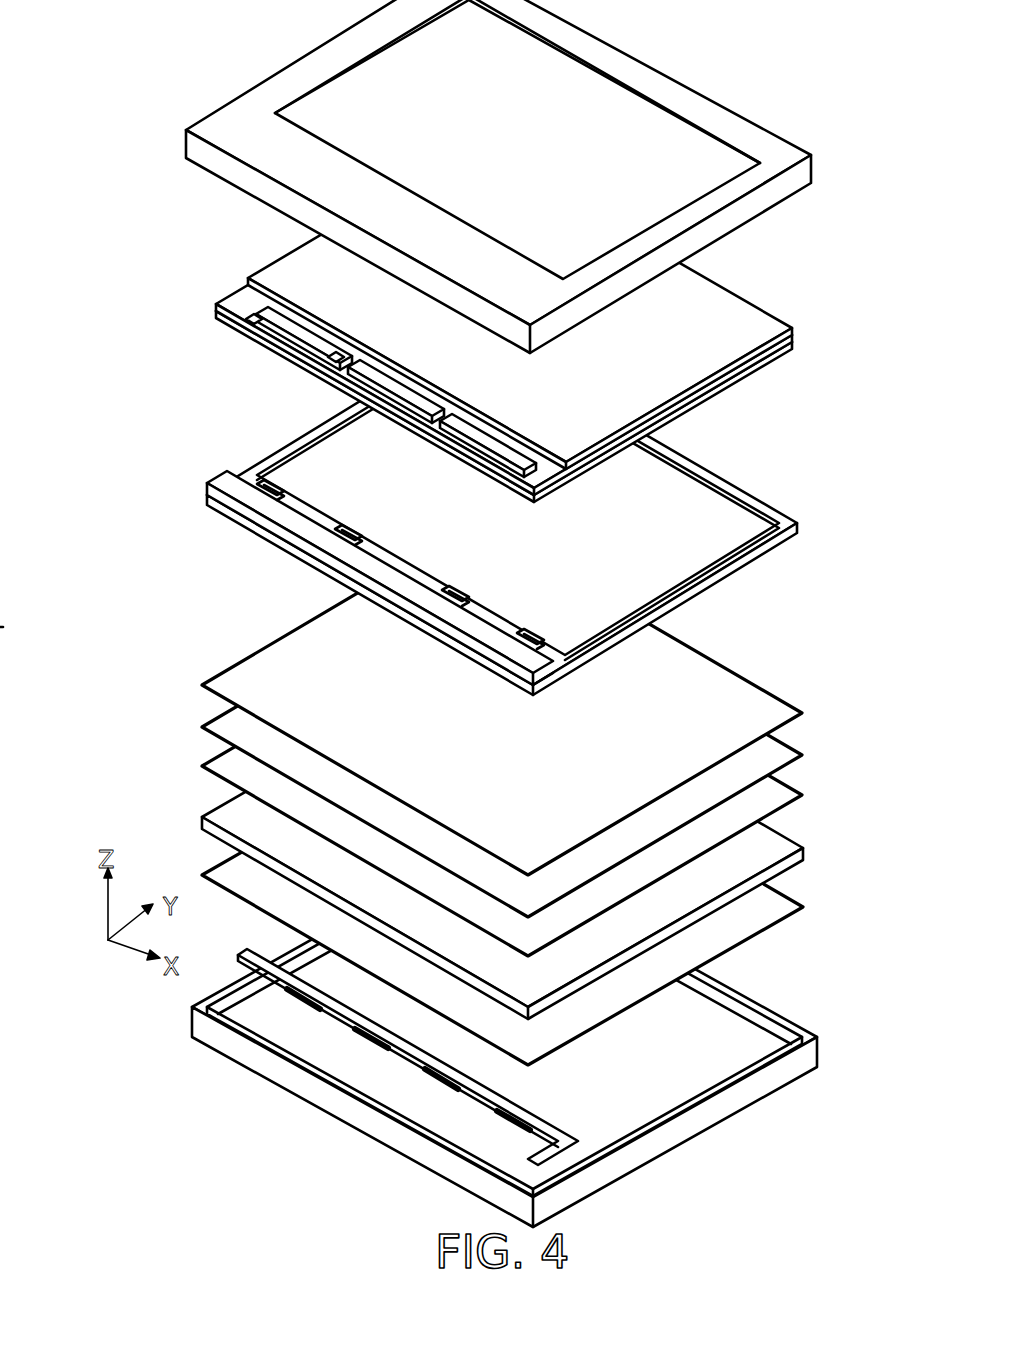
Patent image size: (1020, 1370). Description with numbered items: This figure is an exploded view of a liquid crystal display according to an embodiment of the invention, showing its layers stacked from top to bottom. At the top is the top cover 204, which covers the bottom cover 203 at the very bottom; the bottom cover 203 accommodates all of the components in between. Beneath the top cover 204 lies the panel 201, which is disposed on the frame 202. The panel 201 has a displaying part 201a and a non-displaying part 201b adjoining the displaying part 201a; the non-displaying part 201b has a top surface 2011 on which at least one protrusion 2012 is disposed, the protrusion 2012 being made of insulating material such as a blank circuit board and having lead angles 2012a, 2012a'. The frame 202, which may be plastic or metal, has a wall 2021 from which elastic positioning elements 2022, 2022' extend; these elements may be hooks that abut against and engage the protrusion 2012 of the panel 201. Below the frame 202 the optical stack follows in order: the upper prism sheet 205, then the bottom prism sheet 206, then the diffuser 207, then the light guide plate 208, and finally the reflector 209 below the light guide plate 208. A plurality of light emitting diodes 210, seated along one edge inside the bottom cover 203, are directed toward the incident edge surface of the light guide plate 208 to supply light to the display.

The top cover 204 is at (788, 156).
The panel 201 is at (440, 319).
The displaying part 201a is at (275, 283).
The non-displaying part 201b is at (235, 303).
The lead angle 2012a' is at (177, 338).
The protrusion 2012 is at (287, 337).
The lead angle 2012a is at (272, 402).
The top surface 2011 is at (538, 468).
The frame 202 is at (479, 514).
The wall 2021 is at (262, 530).
The elastic positioning element 2022' is at (194, 508).
The elastic positioning element 2022 is at (377, 587).
The upper prism sheet 205 is at (798, 715).
The bottom prism sheet 206 is at (798, 757).
The diffuser 207 is at (798, 797).
The light guide plate 208 is at (799, 850).
The reflector 209 is at (799, 909).
The bottom cover 203 is at (758, 1045).
The light emitting diodes 210 is at (290, 995).